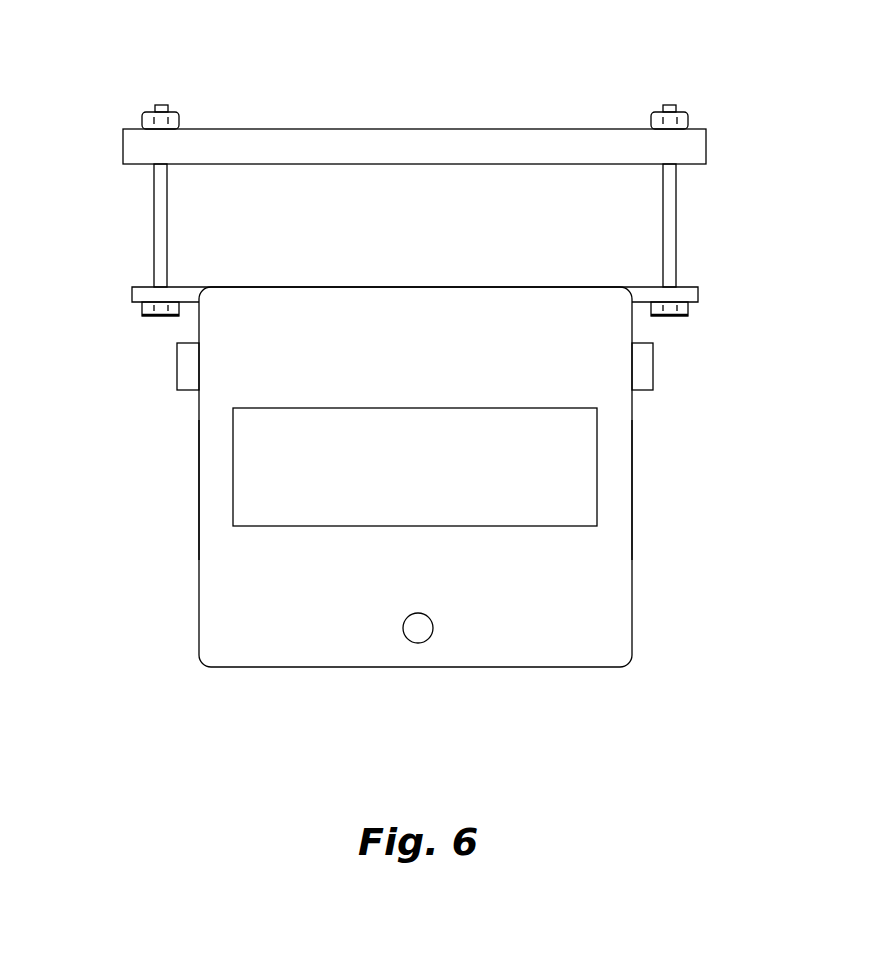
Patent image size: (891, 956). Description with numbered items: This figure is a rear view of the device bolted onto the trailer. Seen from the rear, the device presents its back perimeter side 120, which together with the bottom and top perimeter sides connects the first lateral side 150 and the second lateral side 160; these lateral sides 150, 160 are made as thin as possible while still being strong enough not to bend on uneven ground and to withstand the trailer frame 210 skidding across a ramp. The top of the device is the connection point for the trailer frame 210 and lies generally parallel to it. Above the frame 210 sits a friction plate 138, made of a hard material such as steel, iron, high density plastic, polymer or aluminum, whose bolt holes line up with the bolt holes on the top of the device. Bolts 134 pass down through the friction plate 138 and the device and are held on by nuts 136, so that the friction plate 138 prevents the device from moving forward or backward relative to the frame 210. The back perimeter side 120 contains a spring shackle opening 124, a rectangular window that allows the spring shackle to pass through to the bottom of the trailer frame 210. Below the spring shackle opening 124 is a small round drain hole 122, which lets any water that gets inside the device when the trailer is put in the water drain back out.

The back perimeter side 120 is at (612, 580).
The drain hole 122 is at (442, 640).
The spring shackle opening 124 is at (343, 482).
The bolt 134 is at (688, 220).
The nut 136 is at (688, 104).
The friction plate 138 is at (715, 142).
The first lateral side 150 is at (638, 489).
The second lateral side 160 is at (192, 487).
The trailer frame 210 is at (585, 230).